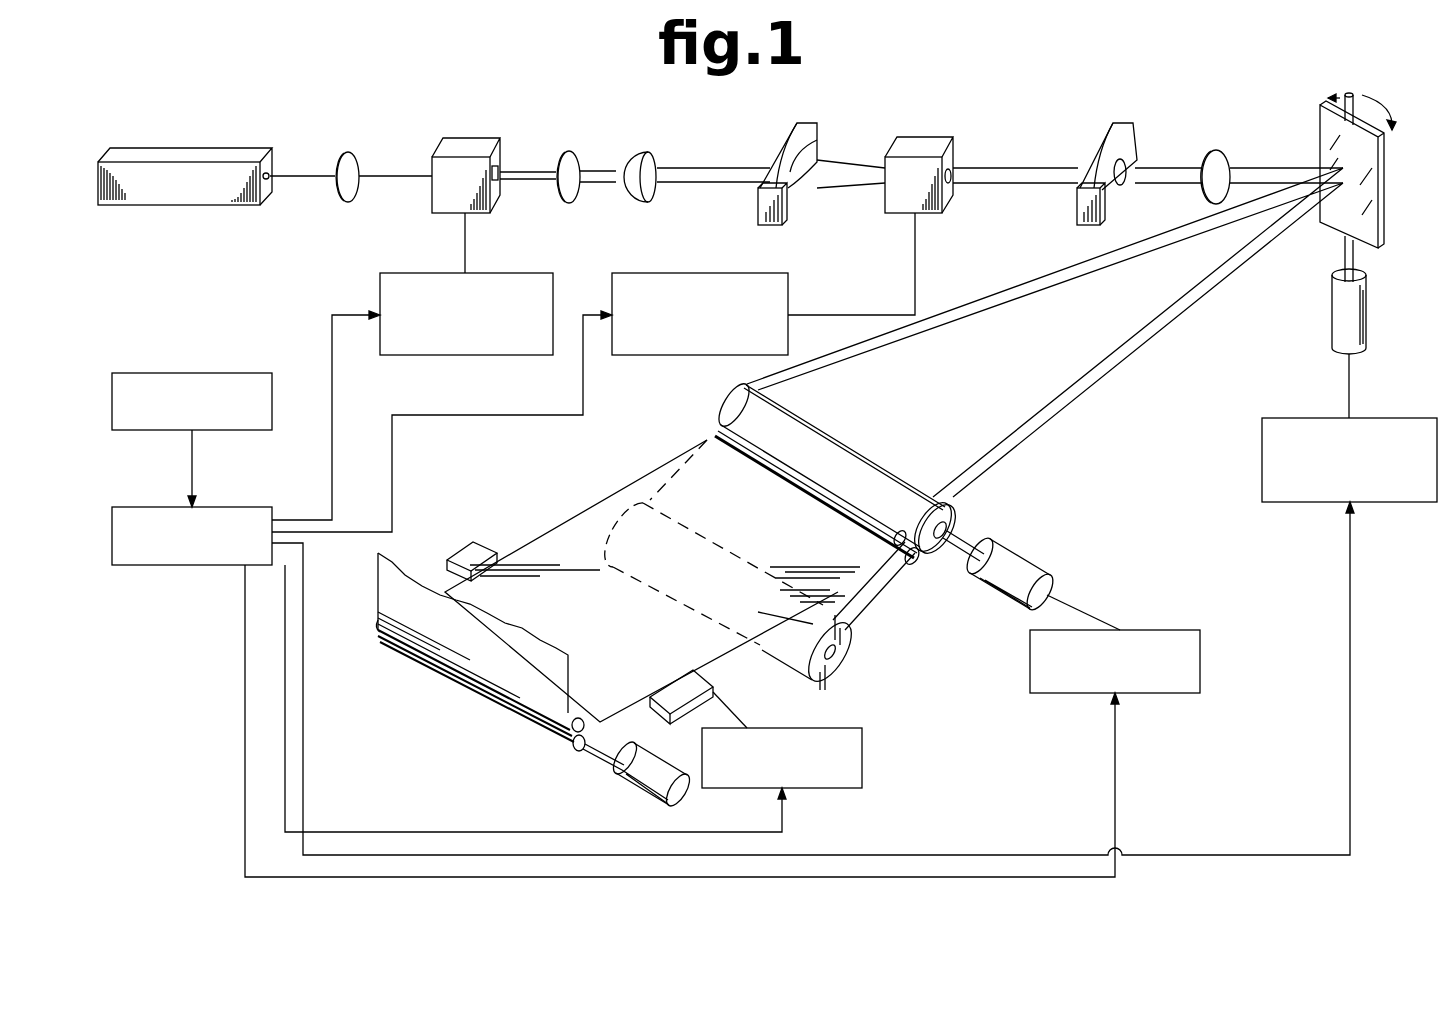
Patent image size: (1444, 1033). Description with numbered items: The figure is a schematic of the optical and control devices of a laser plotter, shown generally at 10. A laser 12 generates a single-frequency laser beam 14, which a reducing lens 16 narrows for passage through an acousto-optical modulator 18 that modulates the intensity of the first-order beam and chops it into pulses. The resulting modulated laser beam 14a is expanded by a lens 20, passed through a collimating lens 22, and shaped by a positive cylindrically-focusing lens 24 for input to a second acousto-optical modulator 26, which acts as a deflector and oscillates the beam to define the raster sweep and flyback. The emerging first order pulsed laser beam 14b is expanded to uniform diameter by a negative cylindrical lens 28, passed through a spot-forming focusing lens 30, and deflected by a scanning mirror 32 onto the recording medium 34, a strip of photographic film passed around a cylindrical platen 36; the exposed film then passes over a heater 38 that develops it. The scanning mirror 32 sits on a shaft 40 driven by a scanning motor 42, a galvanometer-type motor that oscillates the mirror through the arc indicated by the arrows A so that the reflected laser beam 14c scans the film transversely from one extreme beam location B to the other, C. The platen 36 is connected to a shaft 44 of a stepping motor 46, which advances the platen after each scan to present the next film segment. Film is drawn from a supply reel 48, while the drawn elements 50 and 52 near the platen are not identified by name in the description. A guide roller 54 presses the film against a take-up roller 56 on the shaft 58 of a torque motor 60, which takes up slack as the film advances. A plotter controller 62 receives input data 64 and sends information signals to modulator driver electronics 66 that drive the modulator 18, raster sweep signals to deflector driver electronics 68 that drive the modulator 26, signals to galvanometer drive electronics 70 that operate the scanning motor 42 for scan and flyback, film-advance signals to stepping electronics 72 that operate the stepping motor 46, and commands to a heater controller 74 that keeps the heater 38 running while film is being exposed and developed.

The laser plotter optics and control devices 10 is at (1250, 112).
The laser 12 is at (206, 148).
The laser beam 14 is at (297, 176).
The modulated laser beam 14a is at (530, 176).
The first order pulsed laser beam 14b is at (1000, 168).
The reflected laser beam 14c is at (1141, 345).
The reducing lens 16 is at (352, 152).
The acousto-optical modulator 18 is at (460, 138).
The lens 20 is at (572, 152).
The collimating lens 22 is at (644, 153).
The positive cylindrically-focusing lens 24 is at (776, 145).
The second acousto-optical modulator 26 is at (914, 137).
The negative cylindrical lens 28 is at (1097, 150).
The spot-forming focusing lens 30 is at (1216, 150).
The scanning mirror 32 is at (1322, 135).
The recording medium 34 is at (582, 512).
The cylindrical platen 36 is at (716, 404).
The heater 38 is at (452, 545).
The shaft 40 is at (1345, 265).
The scanning motor 42 is at (1332, 333).
The shaft 44 is at (966, 532).
The stepping motor 46 is at (1030, 553).
The supply reel 48 is at (848, 633).
The pinch roller 50 is at (918, 563).
The recording medium on drum 52 is at (706, 437).
The guide roller 54 is at (487, 704).
The take-up roller 56 is at (588, 726).
The shaft 58 is at (596, 752).
The torque motor 60 is at (627, 784).
The plotter controller 62 is at (186, 565).
The input data 64 is at (194, 373).
The modulator driver electronics 66 is at (422, 273).
The deflector driver electronics 68 is at (662, 273).
The galvanometer drive electronics 70 is at (1304, 418).
The stepping electronics 72 is at (1124, 630).
The heater controller 74 is at (862, 764).
The arrows indicating mirror oscillation arc A is at (1372, 95).
The extreme beam location B is at (940, 510).
The extreme beam location C is at (746, 386).